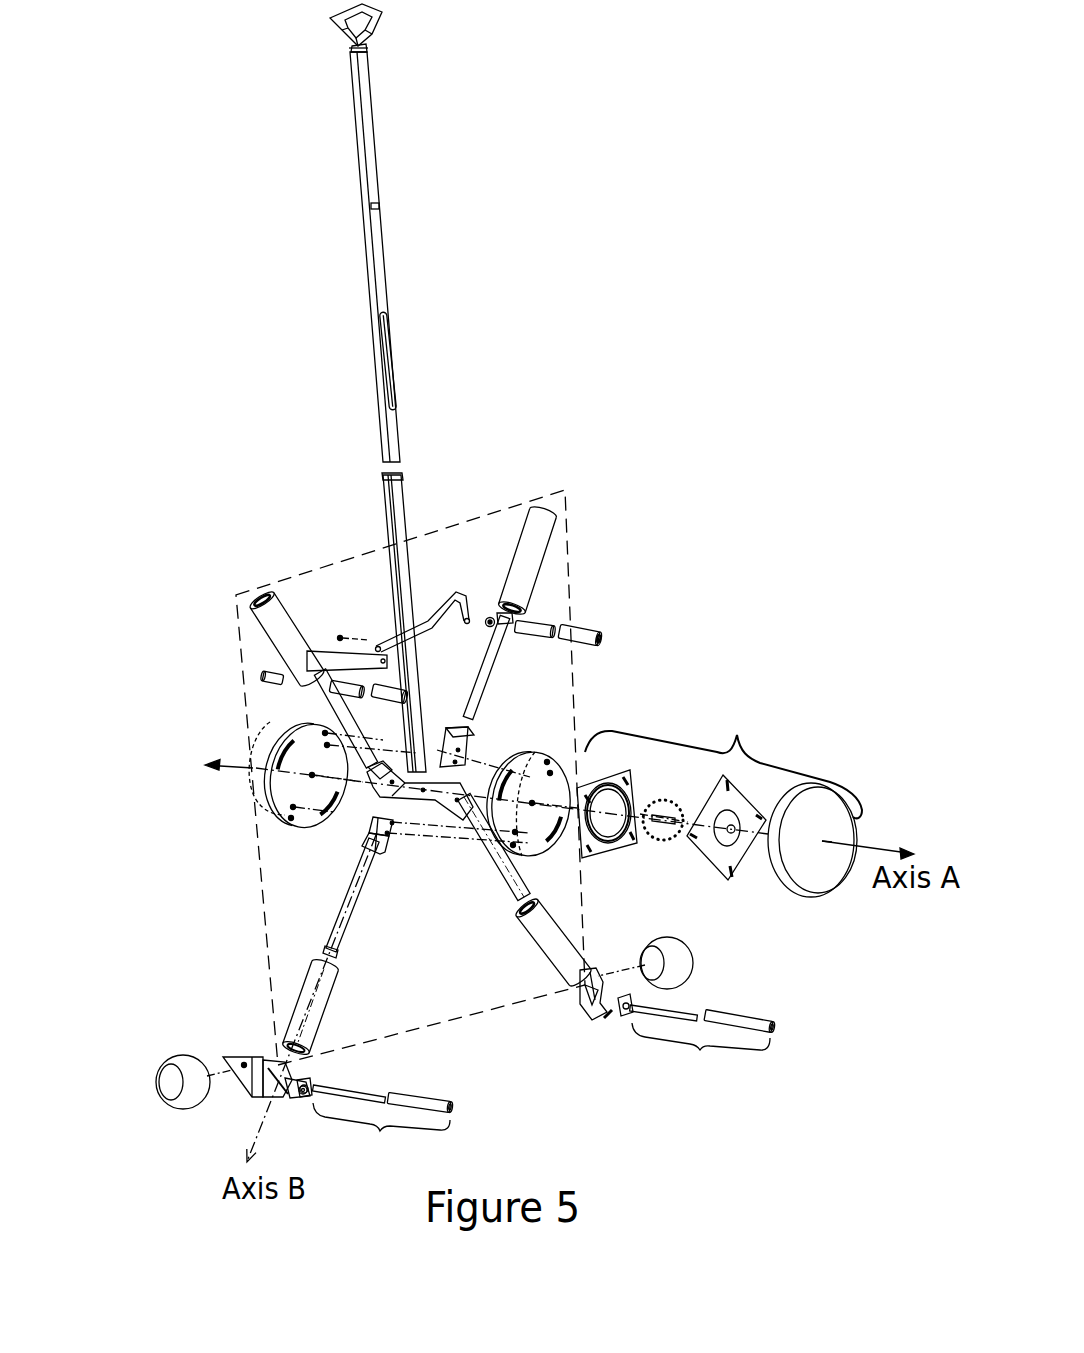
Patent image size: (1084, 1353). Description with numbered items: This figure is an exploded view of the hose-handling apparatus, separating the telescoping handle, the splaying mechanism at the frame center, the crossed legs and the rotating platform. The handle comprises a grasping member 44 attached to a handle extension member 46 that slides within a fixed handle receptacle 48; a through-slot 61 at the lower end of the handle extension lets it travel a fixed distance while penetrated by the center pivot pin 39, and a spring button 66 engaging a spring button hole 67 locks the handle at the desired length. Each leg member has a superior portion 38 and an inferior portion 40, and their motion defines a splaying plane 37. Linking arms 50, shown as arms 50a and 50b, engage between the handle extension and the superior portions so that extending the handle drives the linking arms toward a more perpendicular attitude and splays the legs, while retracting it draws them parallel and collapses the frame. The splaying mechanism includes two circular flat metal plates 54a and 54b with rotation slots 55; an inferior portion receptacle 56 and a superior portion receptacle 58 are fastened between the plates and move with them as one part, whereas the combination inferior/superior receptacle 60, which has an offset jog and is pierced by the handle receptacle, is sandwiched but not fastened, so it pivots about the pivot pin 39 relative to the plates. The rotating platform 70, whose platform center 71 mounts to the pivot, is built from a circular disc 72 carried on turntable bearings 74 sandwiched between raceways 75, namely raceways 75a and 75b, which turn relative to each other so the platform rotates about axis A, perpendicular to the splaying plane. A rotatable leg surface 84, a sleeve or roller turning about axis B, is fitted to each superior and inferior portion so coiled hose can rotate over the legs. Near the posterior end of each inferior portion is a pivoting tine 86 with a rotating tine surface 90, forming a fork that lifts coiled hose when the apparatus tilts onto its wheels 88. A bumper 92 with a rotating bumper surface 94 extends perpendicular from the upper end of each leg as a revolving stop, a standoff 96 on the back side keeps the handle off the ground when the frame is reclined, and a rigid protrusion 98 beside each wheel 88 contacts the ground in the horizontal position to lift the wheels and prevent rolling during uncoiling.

The splaying plane 37 is at (572, 585).
The superior portion 38 is at (305, 703).
The pivot pin 39 is at (667, 826).
The inferior portion 40 is at (490, 860).
The grasping member 44 is at (382, 10).
The handle extension member 46 is at (375, 187).
The handle receptacle 48 is at (400, 483).
The linking arms 50 is at (394, 603).
The linking arm 50a is at (325, 660).
The linking arm 50b is at (450, 608).
The circular flat metal plate 54a is at (548, 760).
The circular flat metal plate 54b is at (283, 742).
The rotation slots 55 is at (292, 806).
The inferior portion receptacle 56 is at (365, 838).
The superior portion receptacle 58 is at (468, 770).
The combination inferior/superior receptacle 60 is at (370, 812).
The through-slot 61 is at (385, 364).
The spring button 66 is at (374, 207).
The spring button hole 67 is at (403, 497).
The rotating platform 70 is at (738, 740).
The platform center 71 is at (818, 838).
The circular disc 72 is at (817, 868).
The turntable bearings 74 is at (666, 824).
The raceways 75 is at (763, 728).
The raceway 75a is at (632, 773).
The raceway 75b is at (745, 810).
The rotatable leg surface 84 is at (530, 565).
The tine 86 is at (533, 1090).
The wheel 88 is at (172, 1062).
The rotating tine surface 90 is at (412, 1098).
The bumper 92 is at (352, 677).
The rotating bumper surface 94 is at (383, 675).
The standoff 96 is at (262, 672).
The rigid protrusion 98 is at (245, 1064).